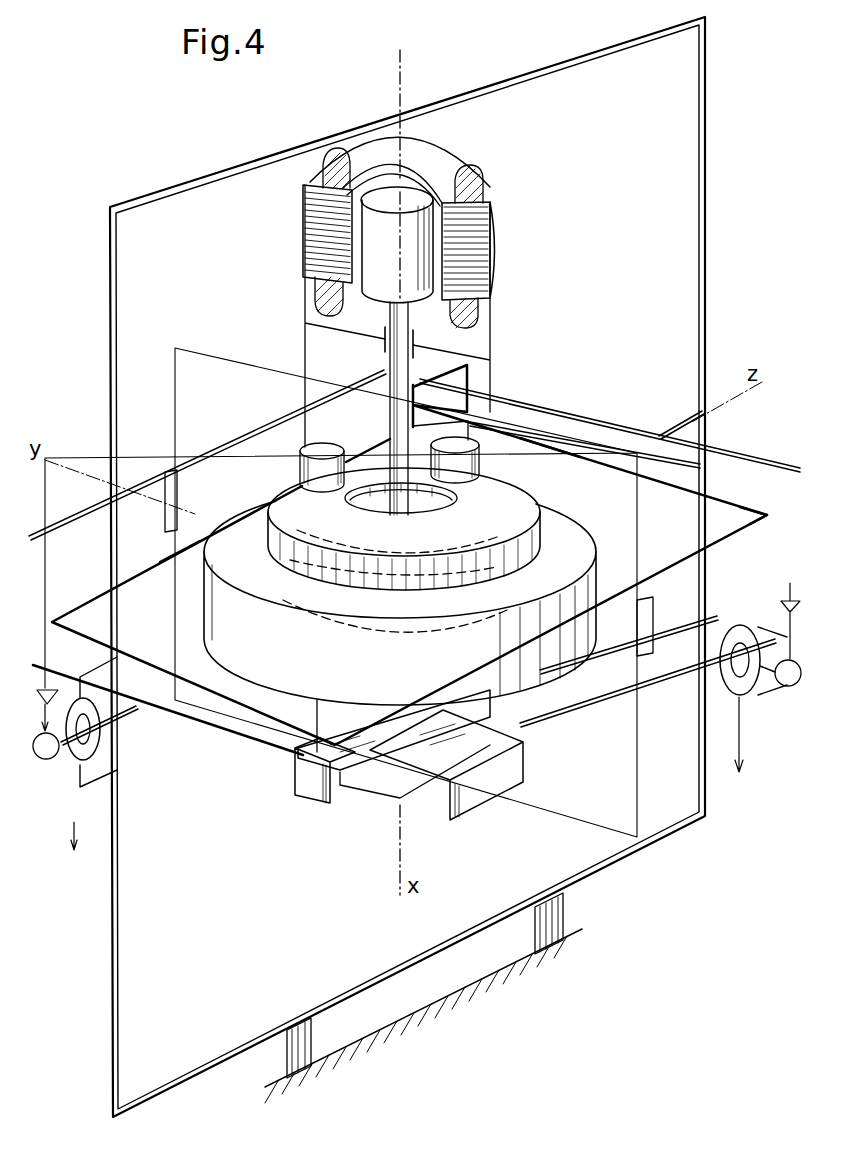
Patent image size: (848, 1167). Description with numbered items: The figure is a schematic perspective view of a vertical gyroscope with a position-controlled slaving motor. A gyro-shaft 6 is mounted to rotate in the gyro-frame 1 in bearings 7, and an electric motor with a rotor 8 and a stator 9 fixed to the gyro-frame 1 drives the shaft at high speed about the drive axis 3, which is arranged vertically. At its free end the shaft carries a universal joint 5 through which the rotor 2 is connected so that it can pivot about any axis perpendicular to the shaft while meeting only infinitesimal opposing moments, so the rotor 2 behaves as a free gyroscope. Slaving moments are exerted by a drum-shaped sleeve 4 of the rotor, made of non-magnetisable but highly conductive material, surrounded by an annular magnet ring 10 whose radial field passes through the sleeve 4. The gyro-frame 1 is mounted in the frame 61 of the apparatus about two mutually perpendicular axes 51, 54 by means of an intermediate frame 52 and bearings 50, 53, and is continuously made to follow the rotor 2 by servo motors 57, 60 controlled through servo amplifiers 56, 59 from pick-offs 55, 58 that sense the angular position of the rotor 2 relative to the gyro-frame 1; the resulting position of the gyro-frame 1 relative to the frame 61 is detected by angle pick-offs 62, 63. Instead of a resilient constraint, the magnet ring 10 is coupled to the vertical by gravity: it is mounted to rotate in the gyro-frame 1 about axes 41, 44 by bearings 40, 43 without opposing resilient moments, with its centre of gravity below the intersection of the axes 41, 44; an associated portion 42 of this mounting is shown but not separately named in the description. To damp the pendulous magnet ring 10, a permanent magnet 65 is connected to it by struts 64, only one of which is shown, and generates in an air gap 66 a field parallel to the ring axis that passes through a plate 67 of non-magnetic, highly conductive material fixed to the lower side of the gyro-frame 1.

The gyro-frame 1 is at (492, 368).
The rotor 2 is at (504, 504).
The drive axis 3 is at (403, 62).
The drum-shaped sleeve 4 is at (547, 523).
The universal joint 5 is at (422, 512).
The gyro-shaft 6 is at (392, 437).
The bearings 7 is at (380, 375).
The rotor of the electric motor 8 is at (388, 263).
The stator 9 is at (472, 258).
The annular magnet ring 10 is at (413, 673).
The bearings 40 is at (247, 672).
The axis 41 is at (557, 485).
The frame corner member 42 is at (730, 503).
The bearings 43 is at (625, 640).
The axis 44 is at (218, 512).
The bearings 50 is at (123, 724).
The axis 51 is at (70, 760).
The intermediate frame 52 is at (718, 450).
The bearings 53 is at (687, 630).
The axis 54 is at (770, 680).
The pick-off 55 is at (334, 483).
The servo amplifier 56 is at (50, 685).
The servo motor 57 is at (47, 761).
The pick-off 58 is at (467, 475).
The servo amplifier 59 is at (787, 600).
The servo motor 60 is at (792, 688).
The frame of the apparatus 61 is at (709, 212).
The angle pick-off 62 is at (100, 755).
The angle pick-off 63 is at (747, 688).
The strut 64 is at (315, 723).
The permanent magnet 65 is at (307, 792).
The air gap 66 is at (490, 708).
The plate 67 is at (525, 757).